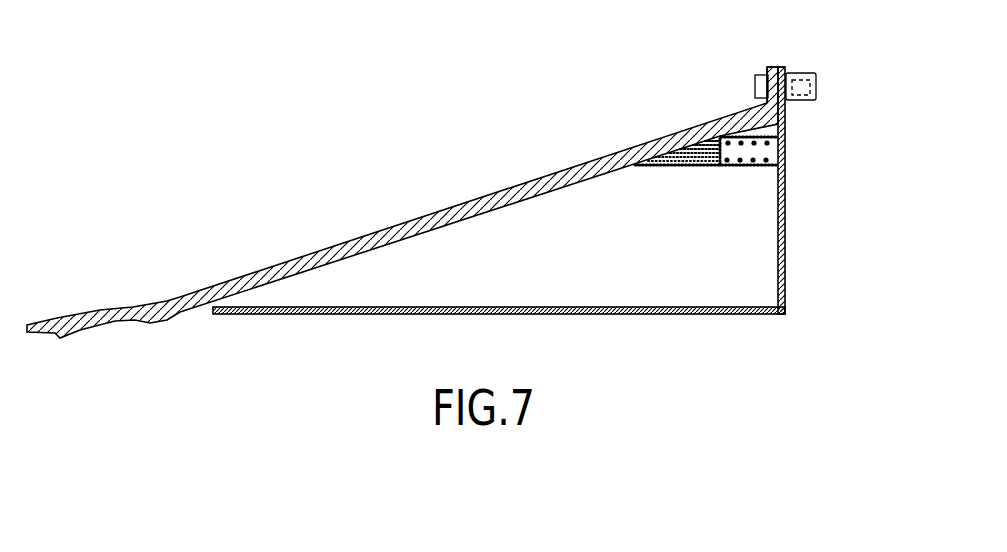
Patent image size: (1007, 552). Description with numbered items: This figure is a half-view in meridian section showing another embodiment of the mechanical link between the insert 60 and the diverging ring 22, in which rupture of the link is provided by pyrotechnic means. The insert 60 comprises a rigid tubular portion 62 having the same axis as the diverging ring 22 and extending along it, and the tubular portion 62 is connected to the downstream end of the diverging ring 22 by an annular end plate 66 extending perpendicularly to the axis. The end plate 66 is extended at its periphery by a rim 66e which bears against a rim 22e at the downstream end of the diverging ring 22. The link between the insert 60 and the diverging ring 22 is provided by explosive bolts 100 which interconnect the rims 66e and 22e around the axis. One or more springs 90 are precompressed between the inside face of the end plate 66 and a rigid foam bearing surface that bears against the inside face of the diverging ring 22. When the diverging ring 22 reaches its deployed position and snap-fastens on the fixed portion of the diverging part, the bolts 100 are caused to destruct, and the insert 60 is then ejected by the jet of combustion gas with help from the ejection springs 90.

The diverging ring 22 is at (530, 183).
The rim 22e is at (767, 72).
The insert 60 is at (706, 331).
The tubular portion 62 is at (575, 315).
The end plate 66 is at (785, 267).
The rim 66e is at (784, 67).
The spring 90 is at (753, 152).
The explosive bolt 100 is at (815, 101).